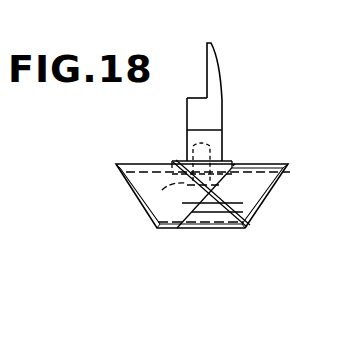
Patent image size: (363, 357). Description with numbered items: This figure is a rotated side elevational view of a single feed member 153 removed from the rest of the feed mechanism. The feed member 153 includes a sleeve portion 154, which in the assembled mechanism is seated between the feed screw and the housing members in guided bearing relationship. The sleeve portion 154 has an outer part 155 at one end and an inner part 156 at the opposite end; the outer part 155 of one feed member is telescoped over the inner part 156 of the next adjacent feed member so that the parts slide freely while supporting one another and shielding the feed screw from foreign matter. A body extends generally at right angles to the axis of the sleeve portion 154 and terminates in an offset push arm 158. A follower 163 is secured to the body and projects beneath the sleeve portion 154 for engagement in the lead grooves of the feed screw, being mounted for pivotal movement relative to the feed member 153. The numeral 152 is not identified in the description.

The shoulder line of blade 152 is at (185, 131).
The feed member 153 is at (225, 121).
The sleeve portion 154 is at (229, 158).
The outer part 155 is at (282, 159).
The inner part 156 is at (143, 172).
The offset push arm 158 is at (221, 71).
The follower 163 is at (207, 203).